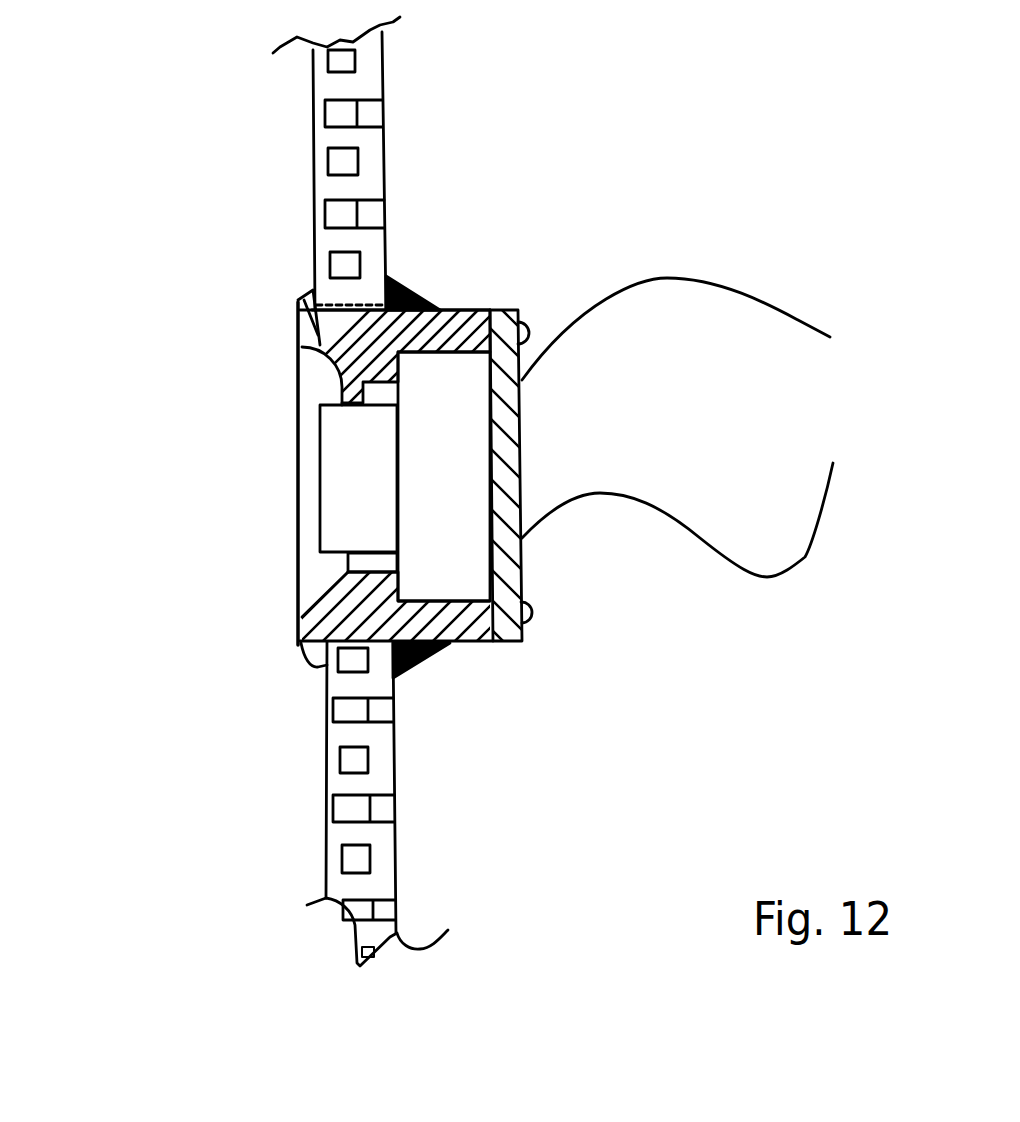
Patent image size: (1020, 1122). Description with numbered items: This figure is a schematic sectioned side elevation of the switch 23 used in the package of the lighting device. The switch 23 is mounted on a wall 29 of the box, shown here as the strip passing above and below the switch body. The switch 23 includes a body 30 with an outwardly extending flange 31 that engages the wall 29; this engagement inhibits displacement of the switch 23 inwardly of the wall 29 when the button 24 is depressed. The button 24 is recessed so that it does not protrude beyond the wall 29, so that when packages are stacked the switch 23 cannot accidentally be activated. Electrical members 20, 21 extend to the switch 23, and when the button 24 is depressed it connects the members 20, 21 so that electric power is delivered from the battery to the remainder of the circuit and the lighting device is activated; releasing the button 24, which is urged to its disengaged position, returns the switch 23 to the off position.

The member 20 is at (805, 556).
The member 21 is at (798, 320).
The switch 23 is at (203, 263).
The button 24 is at (342, 488).
The wall 29 is at (386, 151).
The body 30 is at (297, 302).
The flange 31 is at (468, 323).